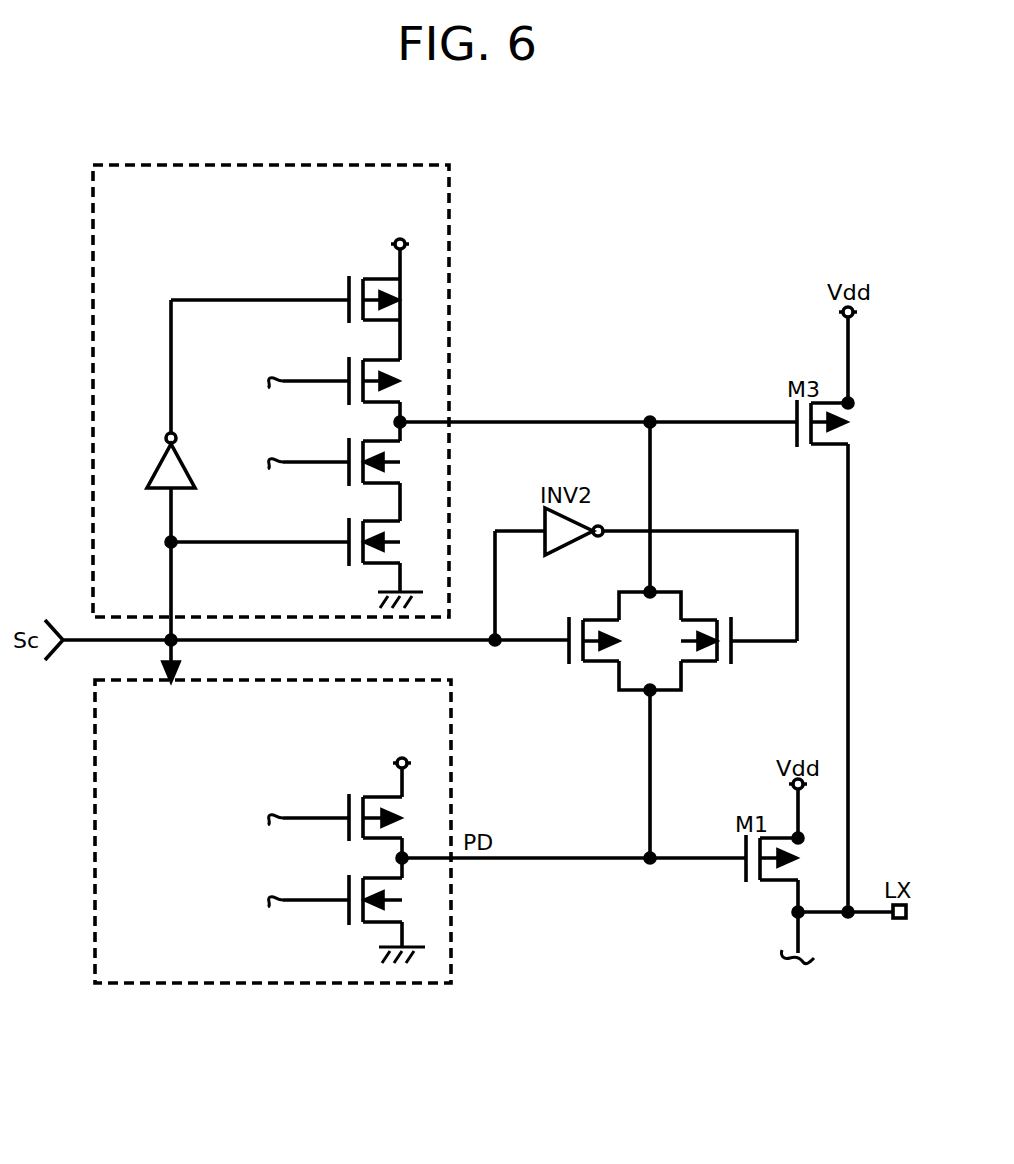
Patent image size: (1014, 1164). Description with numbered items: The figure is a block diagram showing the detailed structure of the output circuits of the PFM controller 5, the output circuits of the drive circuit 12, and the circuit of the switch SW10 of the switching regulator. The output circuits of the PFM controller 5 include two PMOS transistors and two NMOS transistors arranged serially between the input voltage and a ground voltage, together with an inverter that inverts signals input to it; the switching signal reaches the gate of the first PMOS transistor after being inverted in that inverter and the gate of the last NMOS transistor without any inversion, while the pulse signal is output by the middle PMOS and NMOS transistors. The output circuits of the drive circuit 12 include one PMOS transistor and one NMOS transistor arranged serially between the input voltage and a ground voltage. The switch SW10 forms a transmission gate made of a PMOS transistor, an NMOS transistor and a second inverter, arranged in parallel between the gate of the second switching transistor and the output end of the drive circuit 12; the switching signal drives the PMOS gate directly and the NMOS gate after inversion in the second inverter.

The PFM controller 5 is at (451, 287).
The drive circuit 12 is at (451, 923).
The switch SW10 is at (733, 520).